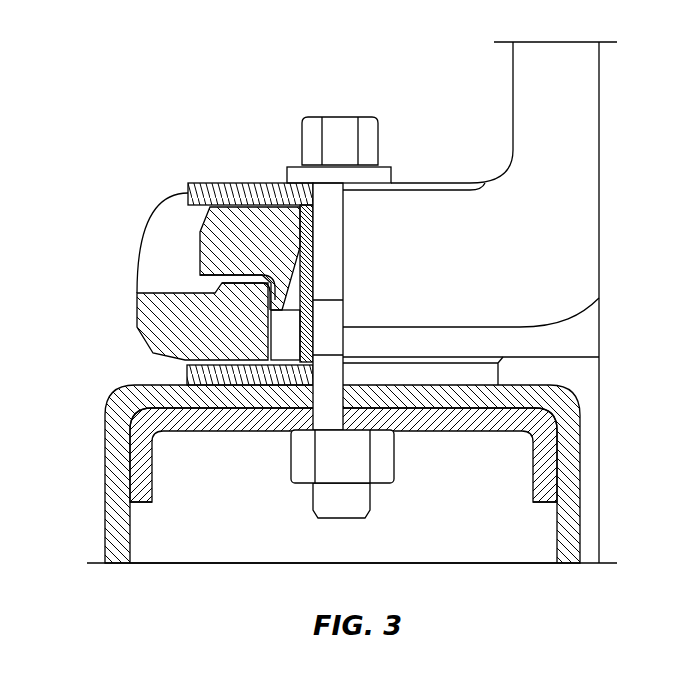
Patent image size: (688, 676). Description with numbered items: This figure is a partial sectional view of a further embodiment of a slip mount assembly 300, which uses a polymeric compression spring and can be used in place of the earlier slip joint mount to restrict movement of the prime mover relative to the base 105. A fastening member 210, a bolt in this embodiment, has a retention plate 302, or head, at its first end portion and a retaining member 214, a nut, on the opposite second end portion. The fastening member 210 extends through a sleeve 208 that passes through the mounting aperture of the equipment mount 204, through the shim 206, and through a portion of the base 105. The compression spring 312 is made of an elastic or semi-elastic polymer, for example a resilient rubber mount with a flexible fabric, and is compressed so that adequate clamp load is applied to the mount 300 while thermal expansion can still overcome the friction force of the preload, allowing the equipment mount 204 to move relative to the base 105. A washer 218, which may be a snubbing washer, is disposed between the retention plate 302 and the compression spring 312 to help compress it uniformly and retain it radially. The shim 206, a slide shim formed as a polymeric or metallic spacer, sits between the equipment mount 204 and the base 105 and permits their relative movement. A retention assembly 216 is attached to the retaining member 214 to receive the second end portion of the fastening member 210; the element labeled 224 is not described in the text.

The slip mount assembly 300 is at (143, 64).
The retention plate 302 is at (337, 117).
The washer 218 is at (250, 183).
The sleeve 208 is at (300, 238).
The fastening member 210 is at (364, 242).
The equipment mount 204 is at (565, 262).
The compression spring 312 is at (200, 247).
The shim 206 is at (186, 377).
The base 105 is at (95, 479).
The retention assembly 216 is at (247, 441).
The liner lip 224 is at (153, 490).
The retaining member 214 is at (405, 455).